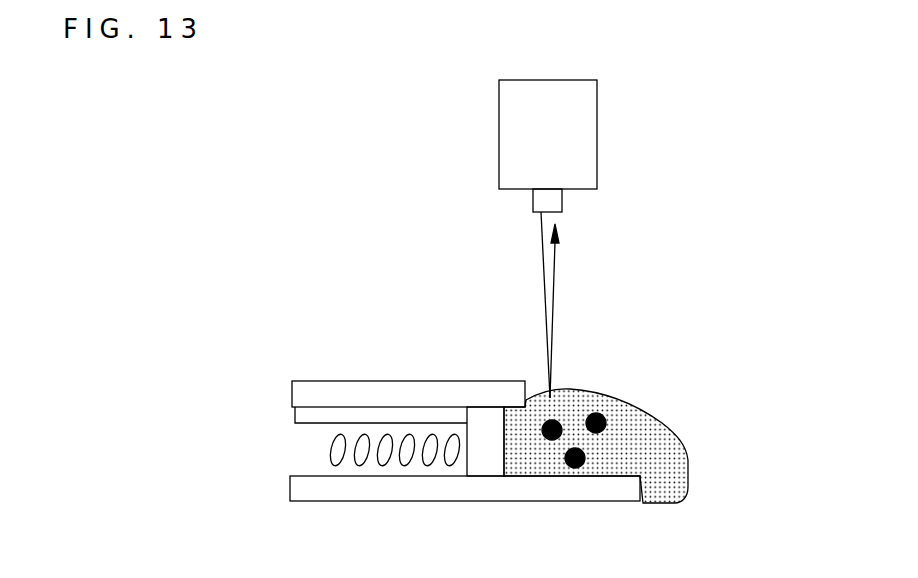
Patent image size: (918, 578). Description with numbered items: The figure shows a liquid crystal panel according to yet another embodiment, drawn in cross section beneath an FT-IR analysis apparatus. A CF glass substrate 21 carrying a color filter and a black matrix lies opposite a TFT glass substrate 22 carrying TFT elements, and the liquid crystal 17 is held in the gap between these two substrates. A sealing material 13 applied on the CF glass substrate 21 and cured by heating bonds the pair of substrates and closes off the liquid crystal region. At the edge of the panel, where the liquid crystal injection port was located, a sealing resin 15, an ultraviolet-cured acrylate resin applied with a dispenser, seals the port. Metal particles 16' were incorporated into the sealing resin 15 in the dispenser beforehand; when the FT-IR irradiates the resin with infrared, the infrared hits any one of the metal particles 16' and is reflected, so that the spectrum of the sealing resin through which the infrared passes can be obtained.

The sealing material 13 is at (485, 470).
The sealing resin 15 is at (688, 466).
The metal particle 16' is at (612, 403).
The liquid crystal 17 is at (333, 452).
The CF glass substrate 21 is at (296, 395).
The TFT glass substrate 22 is at (296, 489).